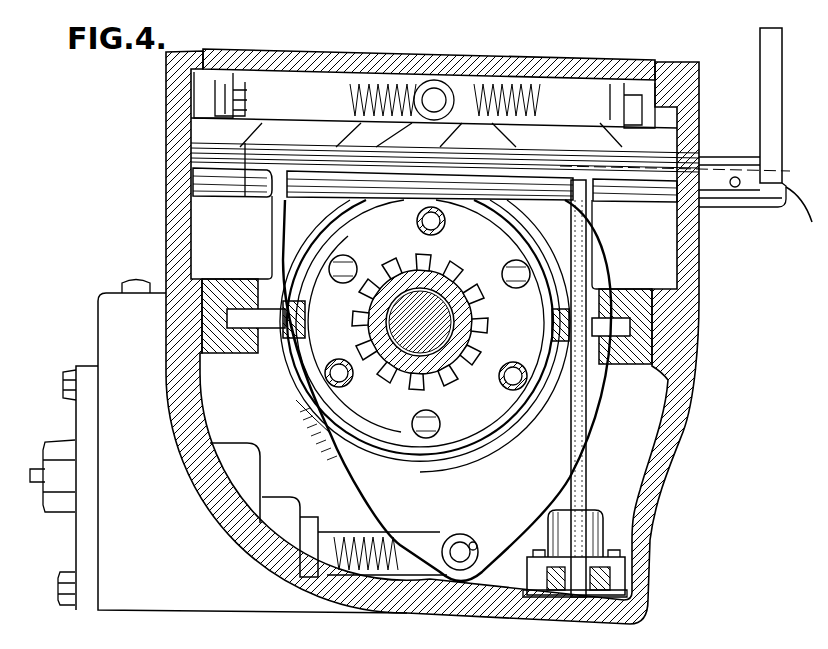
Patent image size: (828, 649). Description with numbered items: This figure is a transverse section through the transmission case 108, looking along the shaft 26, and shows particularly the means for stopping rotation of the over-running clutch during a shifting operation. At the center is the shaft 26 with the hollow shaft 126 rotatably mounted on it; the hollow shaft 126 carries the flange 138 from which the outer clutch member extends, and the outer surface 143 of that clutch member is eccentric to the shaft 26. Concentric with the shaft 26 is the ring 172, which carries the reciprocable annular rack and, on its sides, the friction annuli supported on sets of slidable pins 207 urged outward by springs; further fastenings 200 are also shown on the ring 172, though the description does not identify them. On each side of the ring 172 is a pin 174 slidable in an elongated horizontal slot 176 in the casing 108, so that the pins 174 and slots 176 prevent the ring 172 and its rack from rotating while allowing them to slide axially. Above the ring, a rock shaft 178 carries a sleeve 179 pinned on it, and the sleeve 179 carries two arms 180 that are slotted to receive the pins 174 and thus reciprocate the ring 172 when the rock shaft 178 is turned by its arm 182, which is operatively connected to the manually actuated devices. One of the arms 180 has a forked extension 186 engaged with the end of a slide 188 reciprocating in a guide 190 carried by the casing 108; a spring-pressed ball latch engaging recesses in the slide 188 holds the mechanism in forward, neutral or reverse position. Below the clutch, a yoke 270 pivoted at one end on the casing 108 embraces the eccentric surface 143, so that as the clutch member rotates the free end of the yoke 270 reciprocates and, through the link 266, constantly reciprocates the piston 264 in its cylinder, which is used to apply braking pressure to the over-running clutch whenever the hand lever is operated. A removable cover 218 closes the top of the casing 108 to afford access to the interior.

The transmission case 108 is at (685, 413).
The removable cover 218 is at (562, 62).
The arm 182 is at (762, 72).
The rock shaft 178 is at (755, 197).
The sleeve 179 is at (607, 160).
The arms 180 is at (275, 218).
The slot 176 is at (227, 328).
The pin 174 is at (614, 416).
The ring 172 is at (391, 432).
The flange 138 is at (461, 455).
The outer surface 143 is at (512, 444).
The yoke 270 is at (403, 522).
The link 266 is at (411, 565).
The piston 264 is at (308, 524).
The extension 186 is at (588, 472).
The guide 190 is at (619, 569).
The slide 188 is at (610, 589).
The hollow shaft 126 is at (471, 333).
The shaft 26 is at (453, 316).
The bolt 200 is at (345, 262).
The slidable pins 207 is at (443, 223).